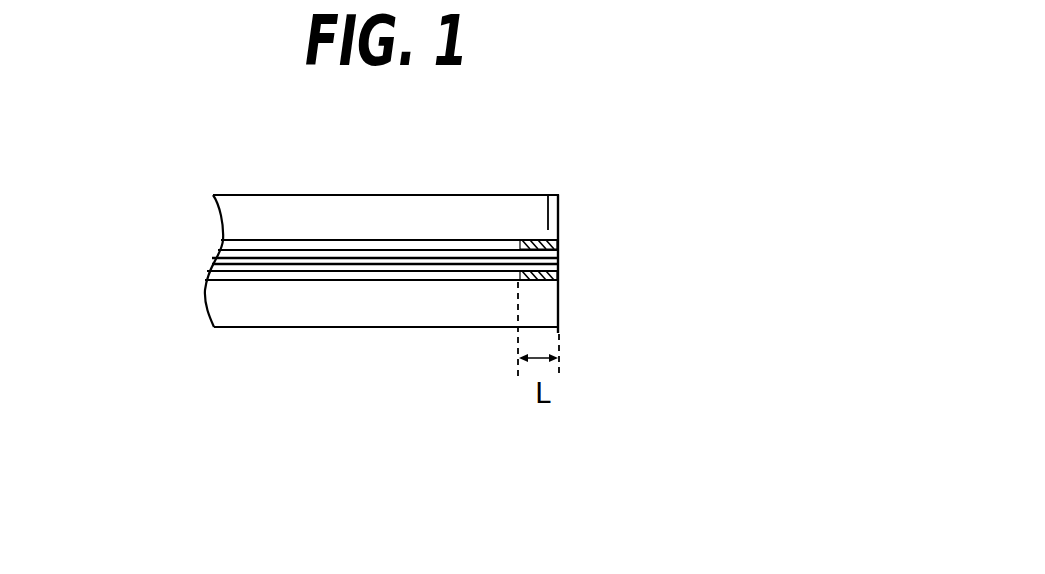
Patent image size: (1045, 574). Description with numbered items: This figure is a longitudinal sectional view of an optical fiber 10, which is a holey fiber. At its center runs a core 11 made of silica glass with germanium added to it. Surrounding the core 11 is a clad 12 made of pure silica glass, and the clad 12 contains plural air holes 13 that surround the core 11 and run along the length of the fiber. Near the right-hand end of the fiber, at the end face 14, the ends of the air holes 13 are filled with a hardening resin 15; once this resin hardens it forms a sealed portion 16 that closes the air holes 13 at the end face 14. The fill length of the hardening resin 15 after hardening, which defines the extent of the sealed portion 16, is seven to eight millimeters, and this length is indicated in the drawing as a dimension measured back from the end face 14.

The optical fiber 10 is at (639, 191).
The core 11 is at (212, 261).
The clad 12 is at (298, 308).
The air holes 13 is at (431, 240).
The end face 14 is at (560, 297).
The hardening resin 15 is at (548, 230).
The sealed portion 16 is at (518, 282).